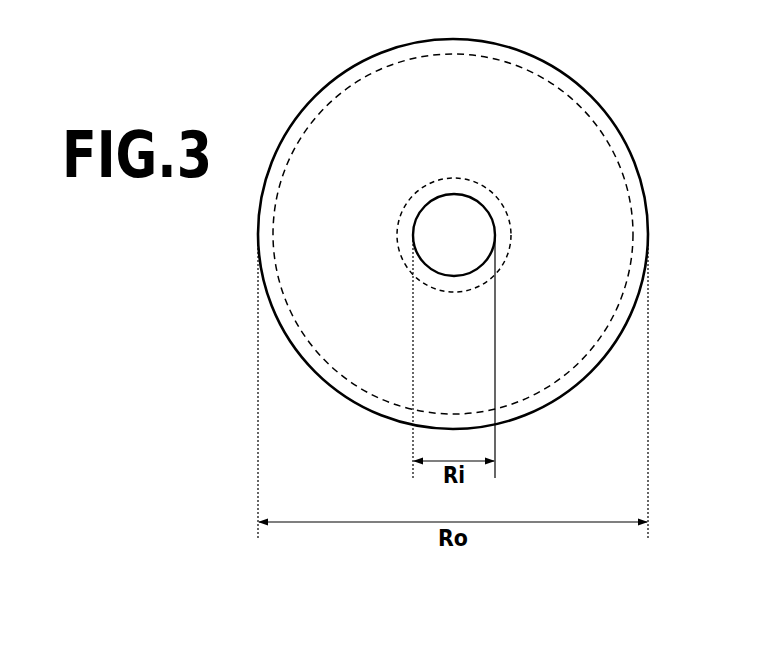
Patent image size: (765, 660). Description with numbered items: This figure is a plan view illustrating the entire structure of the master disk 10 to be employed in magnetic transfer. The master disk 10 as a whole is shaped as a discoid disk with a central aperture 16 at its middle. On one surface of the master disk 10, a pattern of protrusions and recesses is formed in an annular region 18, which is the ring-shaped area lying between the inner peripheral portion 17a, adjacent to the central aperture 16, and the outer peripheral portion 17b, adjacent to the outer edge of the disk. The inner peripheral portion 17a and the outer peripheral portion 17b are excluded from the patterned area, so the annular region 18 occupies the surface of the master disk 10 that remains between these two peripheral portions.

The master disk 10 is at (287, 92).
The central aperture 16 is at (467, 205).
The inner peripheral portion 17a is at (408, 227).
The outer peripheral portion 17b is at (305, 124).
The annular region 18 is at (582, 135).